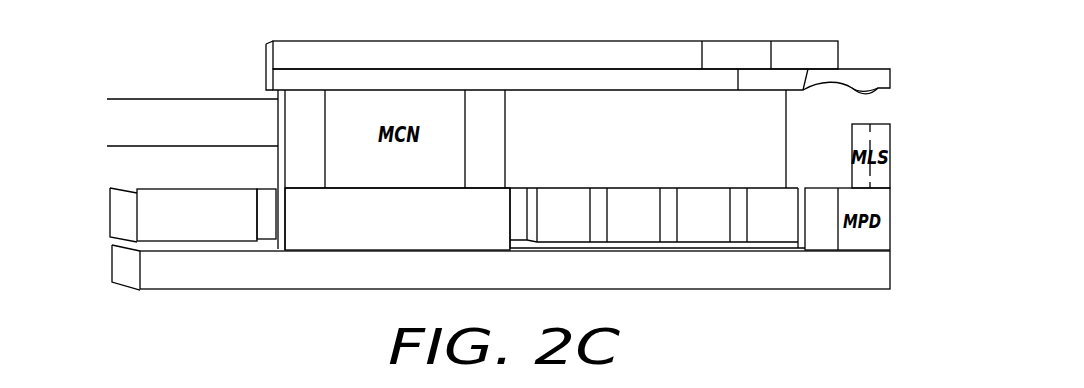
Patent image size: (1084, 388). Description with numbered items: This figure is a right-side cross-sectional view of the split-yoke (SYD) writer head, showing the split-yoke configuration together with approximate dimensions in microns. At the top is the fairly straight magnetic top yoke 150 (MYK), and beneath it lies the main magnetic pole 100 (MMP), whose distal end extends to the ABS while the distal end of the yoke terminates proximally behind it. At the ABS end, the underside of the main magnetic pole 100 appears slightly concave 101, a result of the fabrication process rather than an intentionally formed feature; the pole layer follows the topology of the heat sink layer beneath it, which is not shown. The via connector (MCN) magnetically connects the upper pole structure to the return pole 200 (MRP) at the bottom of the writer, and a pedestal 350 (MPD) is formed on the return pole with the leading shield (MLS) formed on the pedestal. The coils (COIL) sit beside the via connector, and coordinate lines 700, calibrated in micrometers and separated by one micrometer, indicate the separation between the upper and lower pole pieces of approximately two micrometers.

The main magnetic pole 100 is at (633, 83).
The magnetic top yoke 150 is at (684, 55).
The concave underside 101 is at (882, 93).
The coordinate lines 700 is at (178, 99).
The pedestal 350 is at (122, 217).
The return pole 200 is at (190, 275).